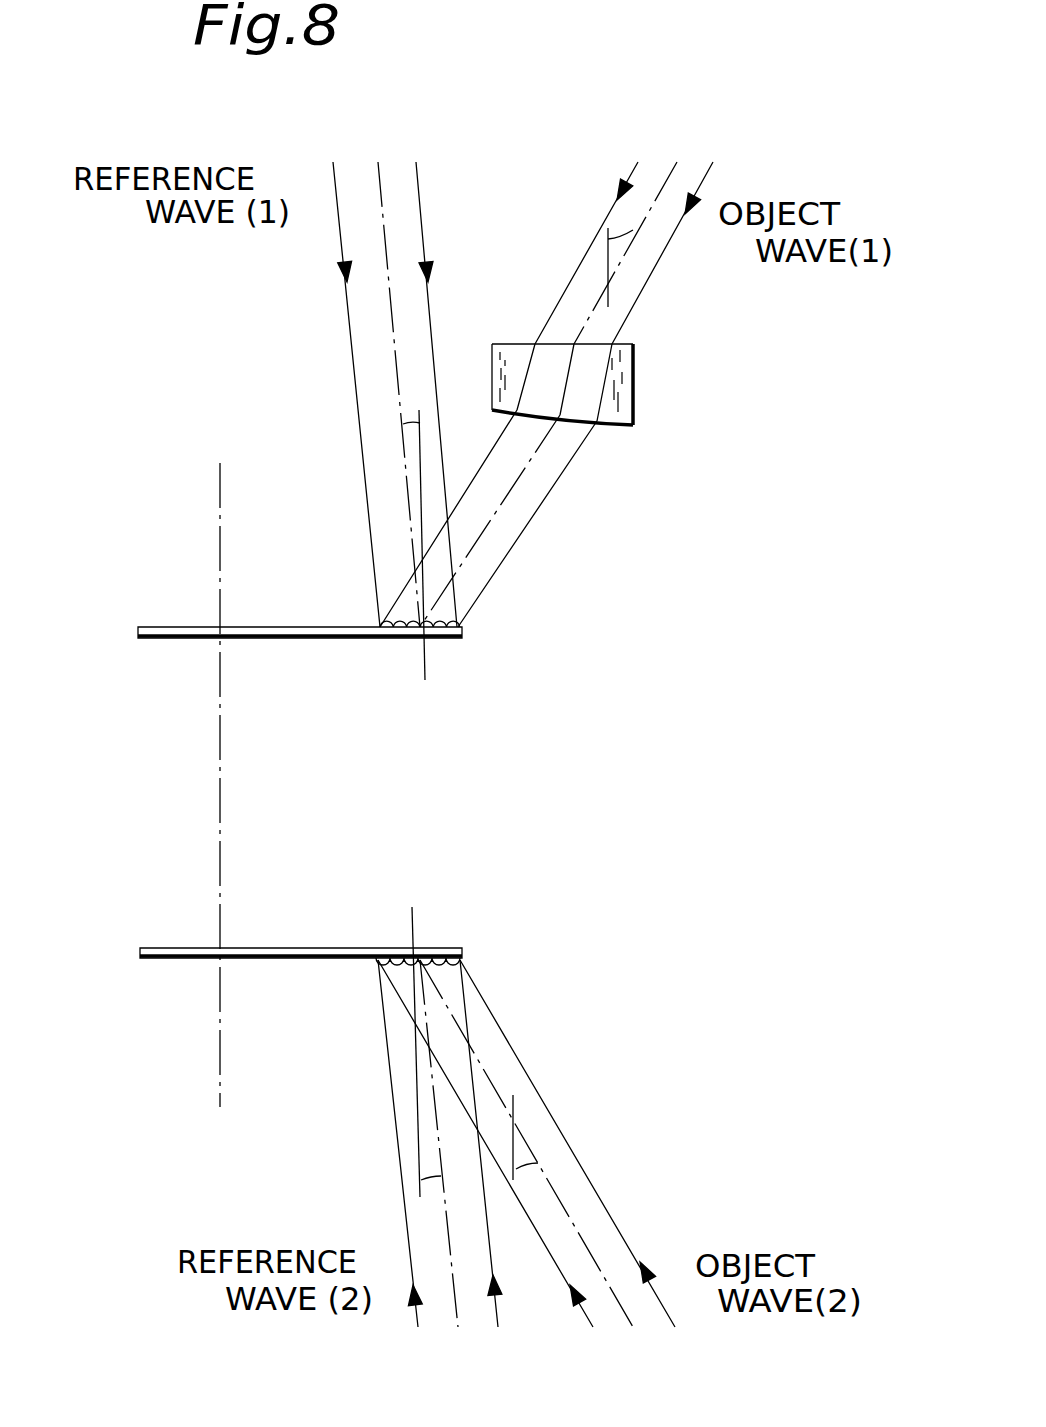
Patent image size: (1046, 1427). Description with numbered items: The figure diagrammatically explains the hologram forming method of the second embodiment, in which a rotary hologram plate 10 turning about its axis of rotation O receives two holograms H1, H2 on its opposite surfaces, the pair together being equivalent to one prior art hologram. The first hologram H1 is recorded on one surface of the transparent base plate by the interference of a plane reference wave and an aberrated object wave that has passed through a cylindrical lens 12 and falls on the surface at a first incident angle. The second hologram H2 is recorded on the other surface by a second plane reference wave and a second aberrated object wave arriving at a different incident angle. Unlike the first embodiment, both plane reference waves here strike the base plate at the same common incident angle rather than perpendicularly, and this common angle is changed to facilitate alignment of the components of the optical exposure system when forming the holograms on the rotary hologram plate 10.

The rotary hologram plate 10 is at (172, 943).
The cylindrical lens 12 is at (620, 386).
The first hologram H1 is at (455, 626).
The second hologram H2 is at (446, 964).
The axis of rotation O is at (220, 503).